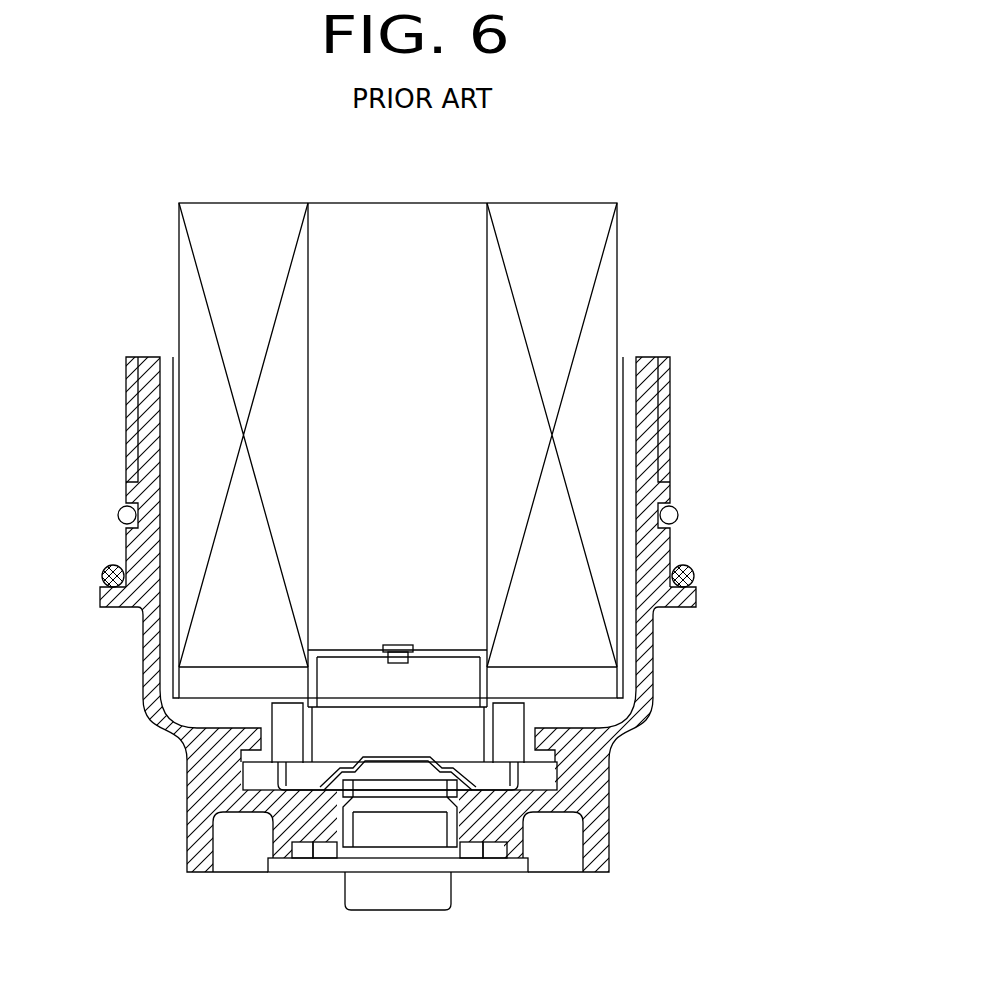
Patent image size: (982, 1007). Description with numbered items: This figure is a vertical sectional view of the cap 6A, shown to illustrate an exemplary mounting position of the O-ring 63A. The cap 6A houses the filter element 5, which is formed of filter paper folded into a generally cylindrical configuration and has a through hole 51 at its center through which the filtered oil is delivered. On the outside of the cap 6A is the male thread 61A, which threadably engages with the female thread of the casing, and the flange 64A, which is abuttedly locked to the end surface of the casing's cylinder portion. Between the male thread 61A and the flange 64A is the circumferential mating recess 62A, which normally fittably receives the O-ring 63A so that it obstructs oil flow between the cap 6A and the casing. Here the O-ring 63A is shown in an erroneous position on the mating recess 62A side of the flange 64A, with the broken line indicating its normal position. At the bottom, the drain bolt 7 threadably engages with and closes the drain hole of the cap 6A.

The filter element 5 is at (228, 628).
The through hole 51 is at (380, 493).
The cap 6A is at (205, 755).
The male thread 61A is at (665, 443).
The mating recess 62A is at (672, 515).
The O-ring 63A is at (668, 510).
The flange 64A is at (680, 597).
The drain bolt 7 is at (313, 873).